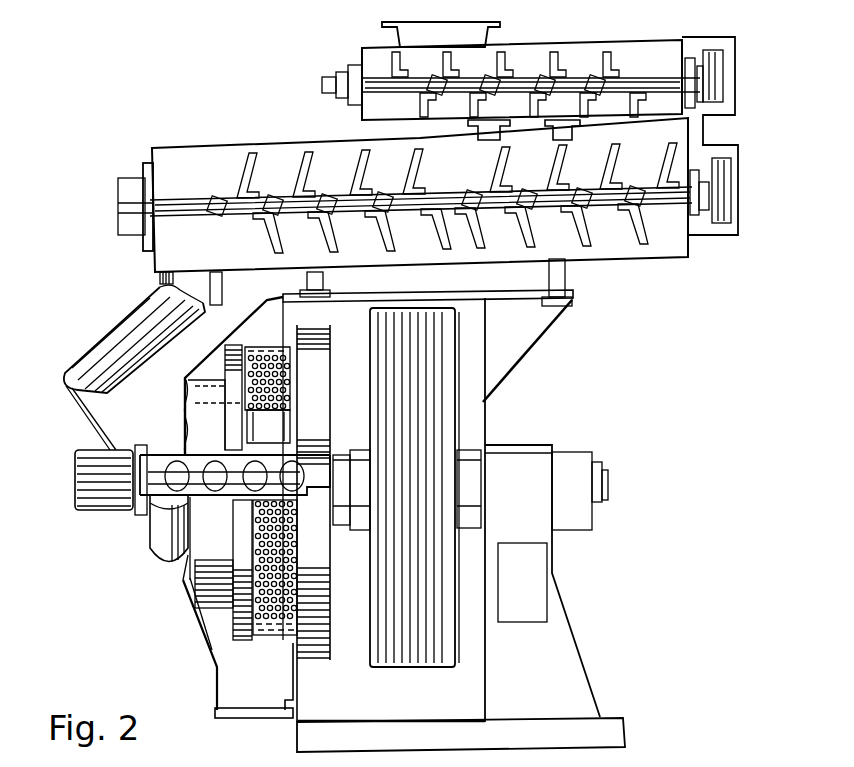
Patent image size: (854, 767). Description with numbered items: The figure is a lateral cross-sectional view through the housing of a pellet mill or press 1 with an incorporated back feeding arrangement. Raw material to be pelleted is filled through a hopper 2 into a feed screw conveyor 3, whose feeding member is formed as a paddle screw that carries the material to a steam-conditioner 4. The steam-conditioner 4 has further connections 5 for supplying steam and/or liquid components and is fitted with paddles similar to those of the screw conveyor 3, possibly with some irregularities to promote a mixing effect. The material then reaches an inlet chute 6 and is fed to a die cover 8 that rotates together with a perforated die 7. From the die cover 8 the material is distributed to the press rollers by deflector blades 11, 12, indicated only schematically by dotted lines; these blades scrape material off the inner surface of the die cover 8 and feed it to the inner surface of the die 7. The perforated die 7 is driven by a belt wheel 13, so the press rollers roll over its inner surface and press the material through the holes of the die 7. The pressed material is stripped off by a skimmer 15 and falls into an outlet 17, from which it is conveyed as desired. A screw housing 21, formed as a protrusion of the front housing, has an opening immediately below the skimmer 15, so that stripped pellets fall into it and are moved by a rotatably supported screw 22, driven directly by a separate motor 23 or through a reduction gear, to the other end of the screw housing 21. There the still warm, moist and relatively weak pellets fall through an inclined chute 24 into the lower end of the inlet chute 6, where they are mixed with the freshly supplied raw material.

The pellet mill or press 1 is at (558, 406).
The hopper 2 is at (468, 30).
The feed screw conveyor 3 is at (370, 60).
The steam-conditioner 4 is at (182, 160).
The connections 5 is at (613, 172).
The inlet chute 6 is at (108, 350).
The perforated die 7 is at (275, 634).
The die cover 8 is at (175, 578).
The deflector blade 11 is at (186, 365).
The deflector blade 12 is at (205, 585).
The belt wheel 13 is at (410, 665).
The skimmer 15 is at (266, 427).
The outlet 17 is at (248, 719).
The screw housing 21 is at (225, 497).
The screw 22 is at (218, 470).
The separate motor 23 is at (115, 500).
The inclined chute 24 is at (170, 546).